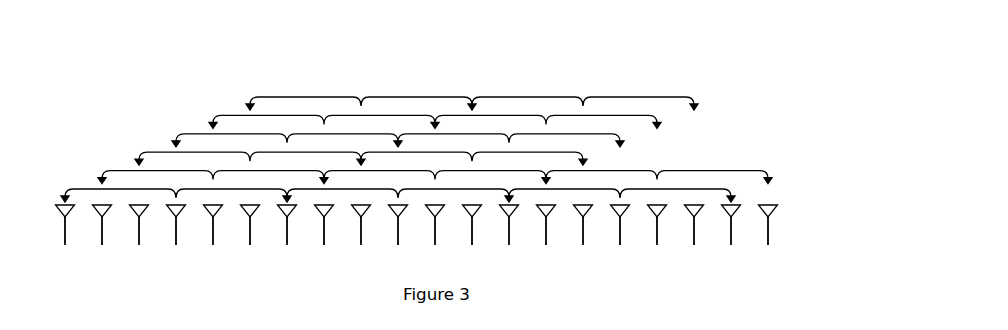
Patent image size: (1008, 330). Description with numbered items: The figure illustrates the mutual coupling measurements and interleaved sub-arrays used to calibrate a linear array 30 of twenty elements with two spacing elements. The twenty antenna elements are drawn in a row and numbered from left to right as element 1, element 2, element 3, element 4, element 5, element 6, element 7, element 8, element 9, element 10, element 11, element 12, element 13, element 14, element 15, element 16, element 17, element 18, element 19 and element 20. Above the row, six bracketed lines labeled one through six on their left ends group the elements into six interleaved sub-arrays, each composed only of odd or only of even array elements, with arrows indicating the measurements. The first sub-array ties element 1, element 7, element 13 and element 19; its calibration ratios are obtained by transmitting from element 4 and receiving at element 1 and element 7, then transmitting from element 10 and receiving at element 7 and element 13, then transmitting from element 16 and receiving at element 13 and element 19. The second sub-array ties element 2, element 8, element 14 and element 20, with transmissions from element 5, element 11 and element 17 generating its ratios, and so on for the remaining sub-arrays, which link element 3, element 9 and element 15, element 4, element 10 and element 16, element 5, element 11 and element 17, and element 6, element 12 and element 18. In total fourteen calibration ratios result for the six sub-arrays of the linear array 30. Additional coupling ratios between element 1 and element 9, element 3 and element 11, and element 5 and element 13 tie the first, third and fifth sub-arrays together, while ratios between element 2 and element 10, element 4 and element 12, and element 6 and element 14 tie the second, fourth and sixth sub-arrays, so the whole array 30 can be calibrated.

The linear array 30 is at (705, 111).
The element 1 is at (64, 225).
The element 2 is at (101, 225).
The element 3 is at (138, 225).
The element 4 is at (175, 225).
The element 5 is at (212, 225).
The element 6 is at (249, 225).
The element 7 is at (286, 225).
The element 8 is at (323, 225).
The element 9 is at (360, 225).
The element 10 is at (394, 225).
The element 11 is at (431, 225).
The element 12 is at (468, 225).
The element 13 is at (505, 225).
The element 14 is at (542, 225).
The element 15 is at (579, 225).
The element 16 is at (616, 225).
The element 17 is at (653, 225).
The element 18 is at (690, 225).
The element 19 is at (727, 225).
The element 20 is at (764, 225).